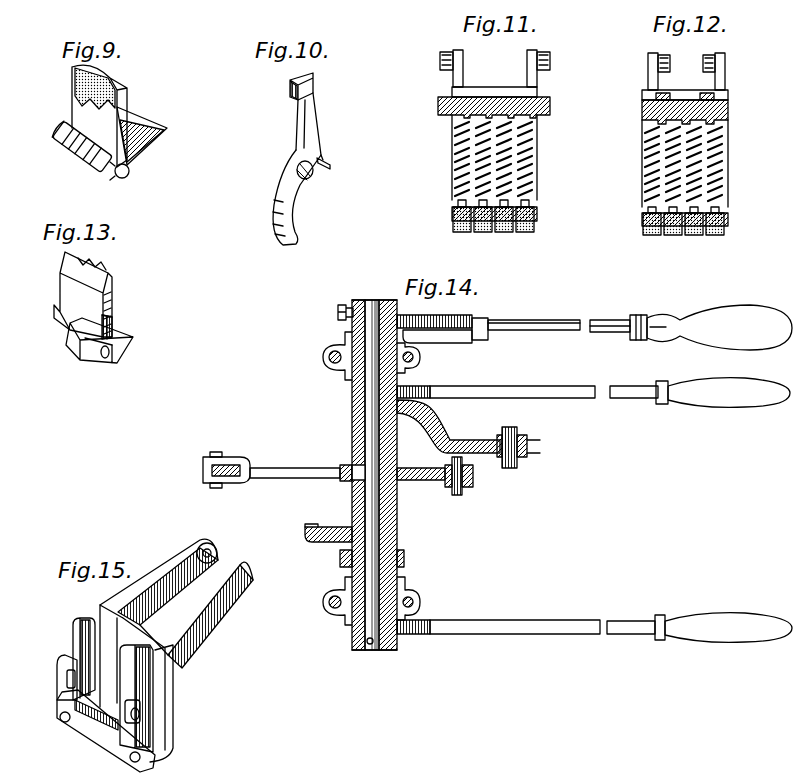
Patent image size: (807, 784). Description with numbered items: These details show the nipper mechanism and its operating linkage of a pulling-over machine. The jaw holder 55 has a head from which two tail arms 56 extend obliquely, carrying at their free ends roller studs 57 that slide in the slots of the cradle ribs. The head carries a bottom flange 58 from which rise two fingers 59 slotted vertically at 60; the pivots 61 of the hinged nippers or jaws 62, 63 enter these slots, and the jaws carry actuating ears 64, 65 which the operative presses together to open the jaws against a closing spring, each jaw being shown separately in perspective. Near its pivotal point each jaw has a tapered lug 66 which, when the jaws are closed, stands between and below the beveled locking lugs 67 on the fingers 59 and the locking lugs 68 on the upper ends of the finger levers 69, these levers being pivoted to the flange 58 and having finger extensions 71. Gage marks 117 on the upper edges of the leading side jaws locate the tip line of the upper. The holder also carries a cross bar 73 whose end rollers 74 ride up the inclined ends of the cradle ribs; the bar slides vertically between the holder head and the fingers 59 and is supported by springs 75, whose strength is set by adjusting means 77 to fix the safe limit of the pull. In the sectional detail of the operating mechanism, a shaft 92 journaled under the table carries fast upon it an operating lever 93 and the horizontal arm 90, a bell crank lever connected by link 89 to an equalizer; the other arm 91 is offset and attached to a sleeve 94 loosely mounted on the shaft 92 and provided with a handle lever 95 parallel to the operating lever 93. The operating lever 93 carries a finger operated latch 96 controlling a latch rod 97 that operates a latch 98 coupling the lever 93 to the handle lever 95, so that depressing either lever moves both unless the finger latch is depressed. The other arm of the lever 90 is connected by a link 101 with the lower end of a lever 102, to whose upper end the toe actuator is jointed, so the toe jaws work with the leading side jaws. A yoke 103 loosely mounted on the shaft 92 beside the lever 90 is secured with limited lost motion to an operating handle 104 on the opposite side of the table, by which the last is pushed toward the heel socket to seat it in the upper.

In FIG. 15, the nipper or jaw holder 55 is at (178, 704).
In FIG. 11, the tail arms 56 is at (453, 78).
In FIG. 12, the tail arms 56 is at (648, 80).
In FIG. 15, the tail arms 56 is at (170, 575).
In FIG. 11, the roller studs 57 is at (440, 60).
In FIG. 12, the roller studs 57 is at (703, 72).
In FIG. 15, the roller studs 57 is at (212, 549).
In FIG. 11, the bottom flange 58 is at (540, 216).
In FIG. 12, the bottom flange 58 is at (728, 219).
In FIG. 15, the bottom flange 58 is at (165, 755).
In FIG. 15, the fingers 59 is at (70, 705).
In FIG. 15, the slots 60 is at (57, 682).
In FIG. 9, the pivots 61 is at (130, 172).
In FIG. 13, the nipper or jaw 62 is at (70, 288).
In FIG. 9, the nipper or jaw 63 is at (117, 96).
In FIG. 13, the actuating ear 64 is at (132, 346).
In FIG. 9, the actuating ear 65 is at (153, 107).
In FIG. 9, the tapered lug 66 is at (72, 103).
In FIG. 13, the tapered lug 66 is at (85, 327).
In FIG. 15, the locking lug 67 is at (74, 640).
In FIG. 10, the locking lug 68 is at (292, 99).
In FIG. 10, the finger lever 69 is at (313, 125).
In FIG. 10, the finger extension 71 is at (290, 205).
In FIG. 9, the cross bar 73 is at (77, 157).
In FIG. 11, the cross bar 73 is at (487, 105).
In FIG. 12, the cross bar 73 is at (728, 112).
In FIG. 11, the rollers 74 is at (548, 97).
In FIG. 11, the springs 75 is at (456, 178).
In FIG. 12, the springs 75 is at (650, 182).
In FIG. 11, the adjusting means 77 is at (524, 232).
In FIG. 12, the adjusting means 77 is at (714, 235).
In FIG. 14, the link 89 is at (530, 445).
In FIG. 14, the horizontal arm 90 is at (433, 482).
In FIG. 14, the horizontal arm 91 is at (450, 438).
In FIG. 14, the shaft 92 is at (365, 440).
In FIG. 14, the operating lever 93 is at (460, 325).
In FIG. 14, the sleeve 94 is at (355, 396).
In FIG. 14, the handle lever 95 is at (495, 390).
In FIG. 14, the finger operated latch 96 is at (655, 325).
In FIG. 14, the latch rod 97 is at (566, 322).
In FIG. 14, the latch 98 is at (428, 352).
In FIG. 14, the link 101 is at (290, 480).
In FIG. 14, the lever 102 is at (203, 472).
In FIG. 14, the yoke 103 is at (385, 446).
In FIG. 14, the operating handle 104 is at (348, 630).
In FIG. 9, the gage marks 117 is at (74, 68).
In FIG. 13, the gage marks 117 is at (93, 283).